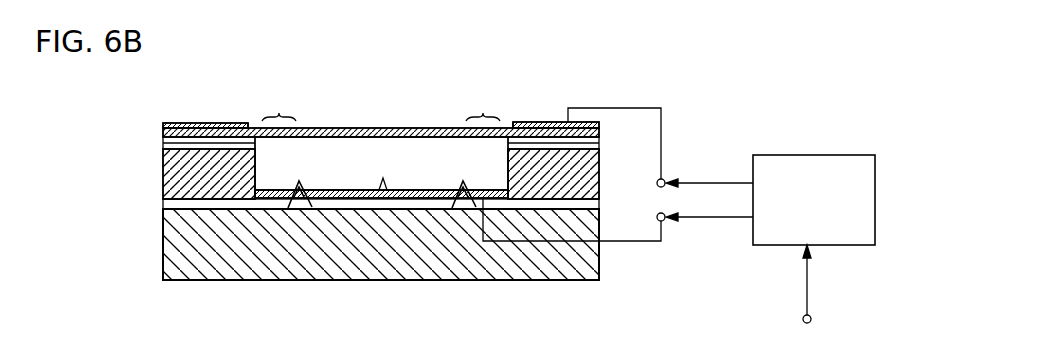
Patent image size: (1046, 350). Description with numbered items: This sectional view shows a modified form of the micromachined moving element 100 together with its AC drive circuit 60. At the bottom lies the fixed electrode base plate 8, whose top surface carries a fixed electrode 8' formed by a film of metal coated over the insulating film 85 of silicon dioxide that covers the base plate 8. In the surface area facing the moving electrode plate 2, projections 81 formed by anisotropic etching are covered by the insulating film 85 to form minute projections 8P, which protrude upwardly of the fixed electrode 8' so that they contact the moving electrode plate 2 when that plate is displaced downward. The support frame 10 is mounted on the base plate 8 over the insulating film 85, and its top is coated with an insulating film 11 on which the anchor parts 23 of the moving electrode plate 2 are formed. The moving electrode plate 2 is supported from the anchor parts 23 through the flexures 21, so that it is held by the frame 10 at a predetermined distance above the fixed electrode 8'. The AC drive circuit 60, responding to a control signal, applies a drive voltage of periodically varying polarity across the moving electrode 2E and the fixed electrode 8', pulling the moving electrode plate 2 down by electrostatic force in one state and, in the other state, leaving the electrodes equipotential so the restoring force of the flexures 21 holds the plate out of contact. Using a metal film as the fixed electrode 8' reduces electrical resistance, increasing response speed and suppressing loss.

The micromachined moving element 100 is at (477, 281).
The fixed electrode base plate 8 is at (361, 244).
The fixed electrode 8' is at (381, 120).
The minute projections 8P is at (296, 189).
The projections 81 is at (304, 198).
The insulating film 85 is at (168, 206).
The support frame 10 is at (168, 165).
The insulating film 11 is at (163, 142).
The moving electrode plate 2 is at (408, 128).
The moving electrode 2E is at (213, 123).
The flexures 21 is at (381, 103).
The anchor parts 23 is at (251, 124).
The AC drive circuit 60 is at (799, 155).